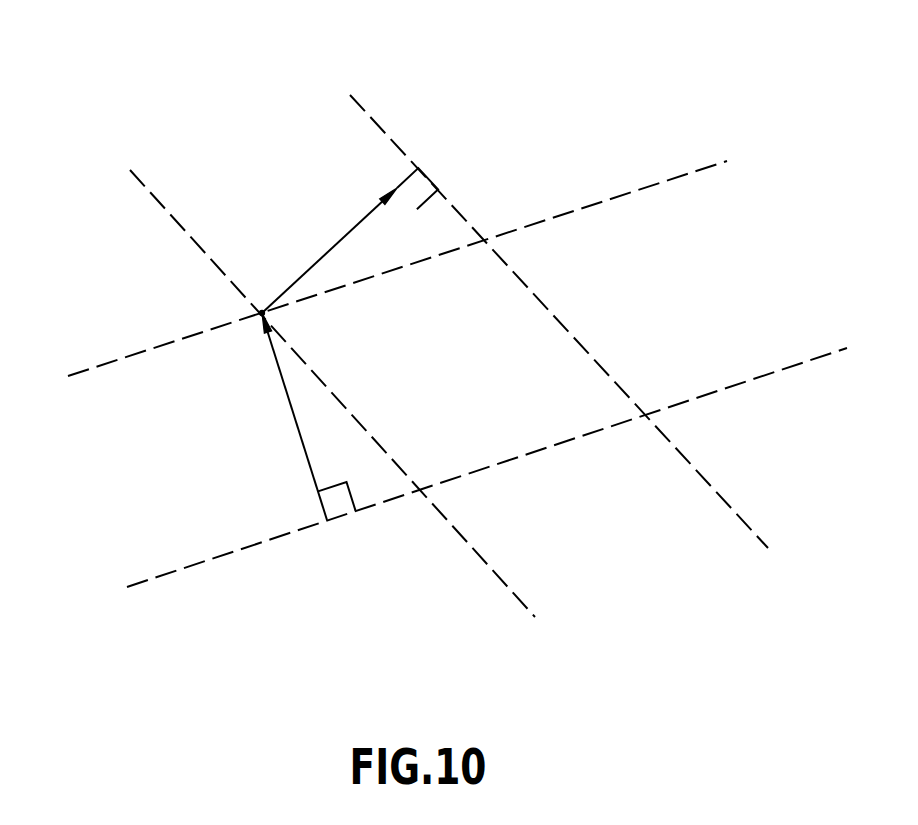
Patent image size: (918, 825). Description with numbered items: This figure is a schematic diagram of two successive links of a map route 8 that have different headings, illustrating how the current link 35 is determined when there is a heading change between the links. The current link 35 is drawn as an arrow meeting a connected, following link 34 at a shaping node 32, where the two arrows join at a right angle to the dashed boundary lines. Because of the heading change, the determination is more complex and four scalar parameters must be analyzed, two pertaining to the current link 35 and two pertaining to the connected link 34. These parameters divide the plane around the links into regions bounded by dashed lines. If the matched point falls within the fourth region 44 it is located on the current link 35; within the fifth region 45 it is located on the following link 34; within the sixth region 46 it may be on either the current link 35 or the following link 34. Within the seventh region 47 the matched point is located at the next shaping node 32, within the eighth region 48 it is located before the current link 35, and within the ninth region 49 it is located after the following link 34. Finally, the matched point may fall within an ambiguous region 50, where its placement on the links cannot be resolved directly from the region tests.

The map route 8 is at (280, 362).
The shaping node 32 is at (257, 311).
The link 34 is at (345, 235).
The current link 35 is at (302, 433).
The fourth region 44 is at (664, 313).
The fifth region 45 is at (217, 163).
The sixth region 46 is at (427, 395).
The seventh region 47 is at (44, 320).
The eighth region 48 is at (269, 647).
The ninth region 49 is at (517, 139).
The ambiguous region 50 is at (786, 488).